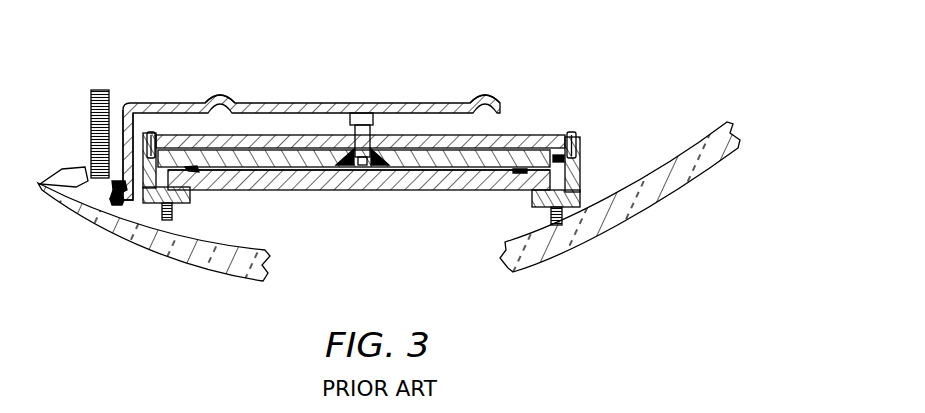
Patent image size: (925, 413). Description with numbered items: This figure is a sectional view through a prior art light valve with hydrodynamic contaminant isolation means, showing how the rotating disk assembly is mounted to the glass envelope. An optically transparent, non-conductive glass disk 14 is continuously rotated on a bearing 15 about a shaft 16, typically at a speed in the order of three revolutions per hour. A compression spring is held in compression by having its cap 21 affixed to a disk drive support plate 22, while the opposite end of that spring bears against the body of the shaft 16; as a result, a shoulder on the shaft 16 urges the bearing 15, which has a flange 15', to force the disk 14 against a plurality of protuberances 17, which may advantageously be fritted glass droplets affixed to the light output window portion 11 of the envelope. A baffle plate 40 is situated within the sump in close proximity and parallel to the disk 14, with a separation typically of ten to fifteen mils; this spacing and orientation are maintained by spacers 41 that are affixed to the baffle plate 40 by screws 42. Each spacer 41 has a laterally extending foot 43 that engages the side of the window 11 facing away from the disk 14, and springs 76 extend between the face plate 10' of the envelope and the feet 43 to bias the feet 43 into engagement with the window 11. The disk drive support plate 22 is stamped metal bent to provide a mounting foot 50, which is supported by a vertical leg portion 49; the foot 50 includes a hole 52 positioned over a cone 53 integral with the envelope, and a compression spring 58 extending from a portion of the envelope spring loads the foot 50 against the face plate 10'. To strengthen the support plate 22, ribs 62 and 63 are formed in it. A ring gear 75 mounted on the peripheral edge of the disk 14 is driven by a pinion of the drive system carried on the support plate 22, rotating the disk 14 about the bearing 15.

The face plate 10' is at (389, 219).
The light output window portion 11 is at (390, 178).
The optically transparent disk 14 is at (453, 167).
The bearing 15 is at (354, 199).
The flange 15' is at (327, 193).
The shaft 16 is at (352, 135).
The protuberances 17 is at (198, 172).
The cap 21 is at (374, 114).
The disk drive support plate 22 is at (160, 102).
The baffle plate 40 is at (528, 136).
The spacers 41 is at (160, 150).
The screws 42 is at (150, 133).
The laterally extending foot 43 is at (148, 204).
The vertical leg portion 49 is at (125, 138).
The mounting foot 50 is at (82, 166).
The hole 52 is at (116, 206).
The cone 53 is at (113, 199).
The compression spring 58 is at (102, 90).
The rib 62 is at (485, 101).
The rib 63 is at (224, 100).
The ring gear 75 is at (582, 163).
The springs 76 is at (175, 217).